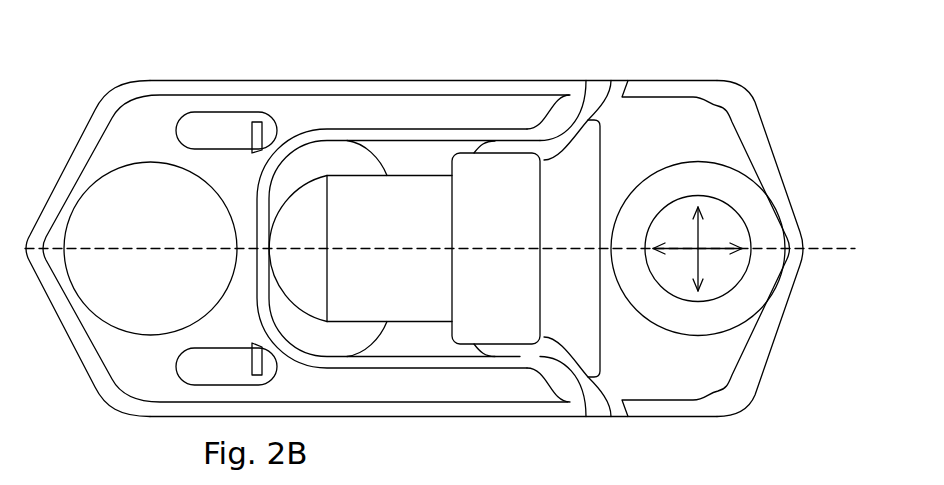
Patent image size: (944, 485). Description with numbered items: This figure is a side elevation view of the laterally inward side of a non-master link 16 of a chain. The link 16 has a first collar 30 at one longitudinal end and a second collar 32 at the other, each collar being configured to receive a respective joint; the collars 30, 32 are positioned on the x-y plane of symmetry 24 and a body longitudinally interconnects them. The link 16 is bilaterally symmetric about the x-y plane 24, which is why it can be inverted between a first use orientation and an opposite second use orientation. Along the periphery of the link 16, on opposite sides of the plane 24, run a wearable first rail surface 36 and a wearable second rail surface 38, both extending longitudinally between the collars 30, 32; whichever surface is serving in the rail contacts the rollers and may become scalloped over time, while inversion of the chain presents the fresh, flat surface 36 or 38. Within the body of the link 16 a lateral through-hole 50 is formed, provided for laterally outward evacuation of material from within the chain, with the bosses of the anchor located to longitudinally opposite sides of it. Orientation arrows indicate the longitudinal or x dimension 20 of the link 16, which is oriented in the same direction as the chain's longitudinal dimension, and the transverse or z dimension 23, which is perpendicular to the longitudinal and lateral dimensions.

The non-master link 16 is at (133, 67).
The second collar 32 is at (80, 138).
The first rail surface 36 is at (458, 80).
The second rail surface 38 is at (447, 417).
The first collar 30 is at (785, 298).
The lateral through-hole 50 is at (453, 193).
The x-y plane of symmetry 24 is at (760, 248).
The longitudinal dimension 20 is at (680, 248).
The transverse dimension 23 is at (697, 265).